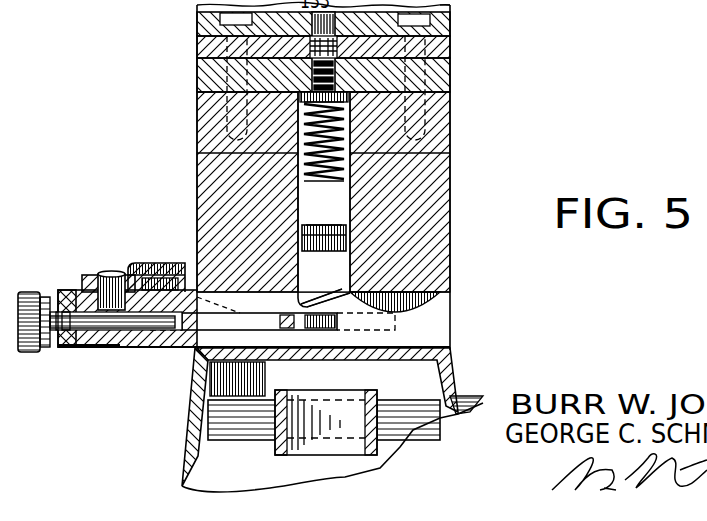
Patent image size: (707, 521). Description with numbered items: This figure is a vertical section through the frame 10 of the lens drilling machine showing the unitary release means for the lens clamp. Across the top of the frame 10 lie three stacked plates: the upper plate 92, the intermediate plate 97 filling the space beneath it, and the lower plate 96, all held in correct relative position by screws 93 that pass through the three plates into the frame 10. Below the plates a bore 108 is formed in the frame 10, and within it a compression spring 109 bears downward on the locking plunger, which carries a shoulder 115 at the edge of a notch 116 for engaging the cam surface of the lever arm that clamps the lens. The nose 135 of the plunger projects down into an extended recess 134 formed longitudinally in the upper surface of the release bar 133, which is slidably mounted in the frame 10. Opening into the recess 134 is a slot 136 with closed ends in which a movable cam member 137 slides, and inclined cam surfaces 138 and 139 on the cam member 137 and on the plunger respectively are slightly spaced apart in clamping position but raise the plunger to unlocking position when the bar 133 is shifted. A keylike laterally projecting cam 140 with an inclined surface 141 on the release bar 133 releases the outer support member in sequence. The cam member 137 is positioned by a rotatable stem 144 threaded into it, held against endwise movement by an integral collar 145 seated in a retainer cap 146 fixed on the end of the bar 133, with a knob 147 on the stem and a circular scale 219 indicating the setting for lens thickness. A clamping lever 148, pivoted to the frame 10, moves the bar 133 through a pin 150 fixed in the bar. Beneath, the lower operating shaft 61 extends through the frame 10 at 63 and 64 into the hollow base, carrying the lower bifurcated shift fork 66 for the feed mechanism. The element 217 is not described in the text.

The frame 10 is at (452, 204).
The upper plate 92 is at (450, 28).
The intermediate plate 97 is at (450, 48).
The lower plate 96 is at (450, 80).
The screws 93 is at (452, 112).
The upper element 217 is at (488, 2).
The bore 108 is at (205, 153).
The compression spring 109 is at (445, 153).
The shoulder 115 is at (340, 226).
The notch 116 is at (320, 236).
The extended recess 134 is at (300, 307).
The nose 135 is at (305, 302).
The slot 136 is at (186, 268).
The inclined cam surface 138 is at (335, 300).
The inclined cam surface 139 is at (395, 308).
The keylike laterally projecting cam 140 is at (193, 322).
The inclined surface 141 is at (288, 360).
The movable cam member 137 is at (338, 348).
The lower operating shaft 61 is at (413, 410).
The frame shaft opening 64 is at (456, 400).
The frame shaft opening 63 is at (186, 428).
The lower bifurcated shift fork 66 is at (285, 456).
The rotatable stem 144 is at (110, 322).
The integral collar 145 is at (83, 292).
The retainer cap 146 is at (70, 352).
The knob 147 is at (31, 352).
The clamping lever 148 is at (86, 280).
The pin 150 is at (110, 272).
The circular scale 219 is at (45, 352).
The release bar 133 is at (123, 352).